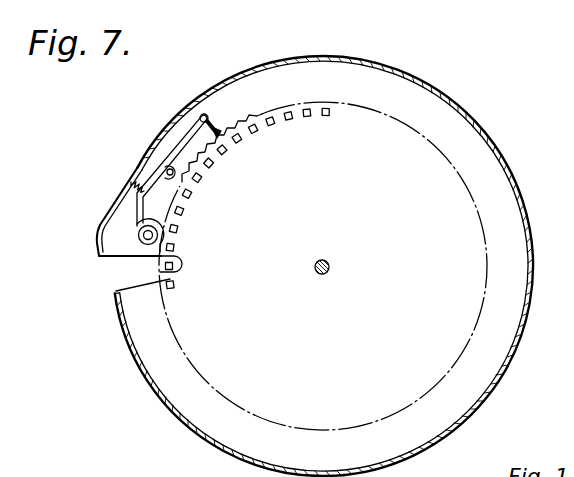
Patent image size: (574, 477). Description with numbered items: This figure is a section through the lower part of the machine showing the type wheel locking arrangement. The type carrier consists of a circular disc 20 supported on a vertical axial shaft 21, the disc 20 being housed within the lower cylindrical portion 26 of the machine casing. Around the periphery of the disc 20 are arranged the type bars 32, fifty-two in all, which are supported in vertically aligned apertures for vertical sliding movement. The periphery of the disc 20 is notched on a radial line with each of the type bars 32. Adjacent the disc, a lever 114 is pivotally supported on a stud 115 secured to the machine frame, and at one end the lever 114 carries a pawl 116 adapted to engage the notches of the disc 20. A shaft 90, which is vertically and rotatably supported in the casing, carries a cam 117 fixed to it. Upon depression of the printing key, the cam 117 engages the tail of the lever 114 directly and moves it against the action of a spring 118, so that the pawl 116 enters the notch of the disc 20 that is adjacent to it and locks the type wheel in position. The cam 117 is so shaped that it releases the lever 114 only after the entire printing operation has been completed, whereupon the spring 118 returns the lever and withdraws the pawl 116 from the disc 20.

The circular disc 20 is at (442, 181).
The vertical axial shaft 21 is at (331, 266).
The cylindrical portion 26 is at (528, 338).
The type bars 32 is at (303, 106).
The shaft 90 is at (143, 236).
The lever 114 is at (182, 142).
The stud 115 is at (163, 168).
The pawl 116 is at (207, 118).
The cam 117 is at (138, 256).
The spring 118 is at (128, 184).